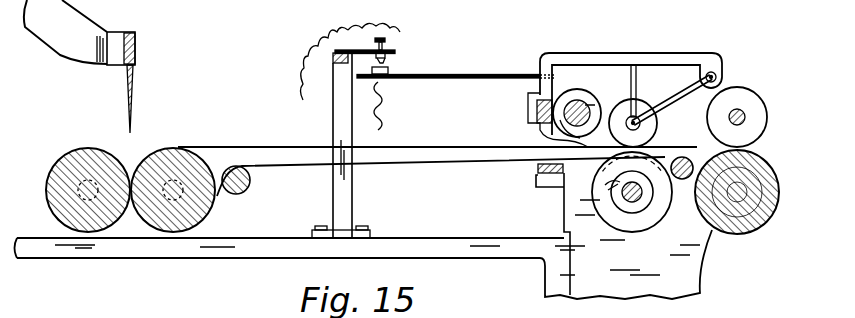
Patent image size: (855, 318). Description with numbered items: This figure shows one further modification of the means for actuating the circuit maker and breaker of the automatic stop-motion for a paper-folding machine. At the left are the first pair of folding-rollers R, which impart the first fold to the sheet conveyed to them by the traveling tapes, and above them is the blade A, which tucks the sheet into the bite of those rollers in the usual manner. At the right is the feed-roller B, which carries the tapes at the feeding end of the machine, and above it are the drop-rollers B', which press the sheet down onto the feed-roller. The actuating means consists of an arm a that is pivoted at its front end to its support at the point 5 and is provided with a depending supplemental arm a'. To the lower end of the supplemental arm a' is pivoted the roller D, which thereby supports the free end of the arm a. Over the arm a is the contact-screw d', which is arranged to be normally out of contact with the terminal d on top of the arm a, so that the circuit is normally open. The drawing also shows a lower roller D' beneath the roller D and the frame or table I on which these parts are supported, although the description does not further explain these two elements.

The blade A is at (137, 100).
The folding-rollers R is at (90, 148).
The contact-screw d' is at (391, 33).
The terminal d is at (395, 59).
The arm a is at (456, 66).
The pivot 5 is at (718, 72).
The drop-rollers B' is at (737, 104).
The supplemental arm a' is at (672, 100).
The roller D is at (644, 123).
The lower pulley D' is at (632, 209).
The frame / table I is at (245, 250).
The feed-roller B is at (737, 208).